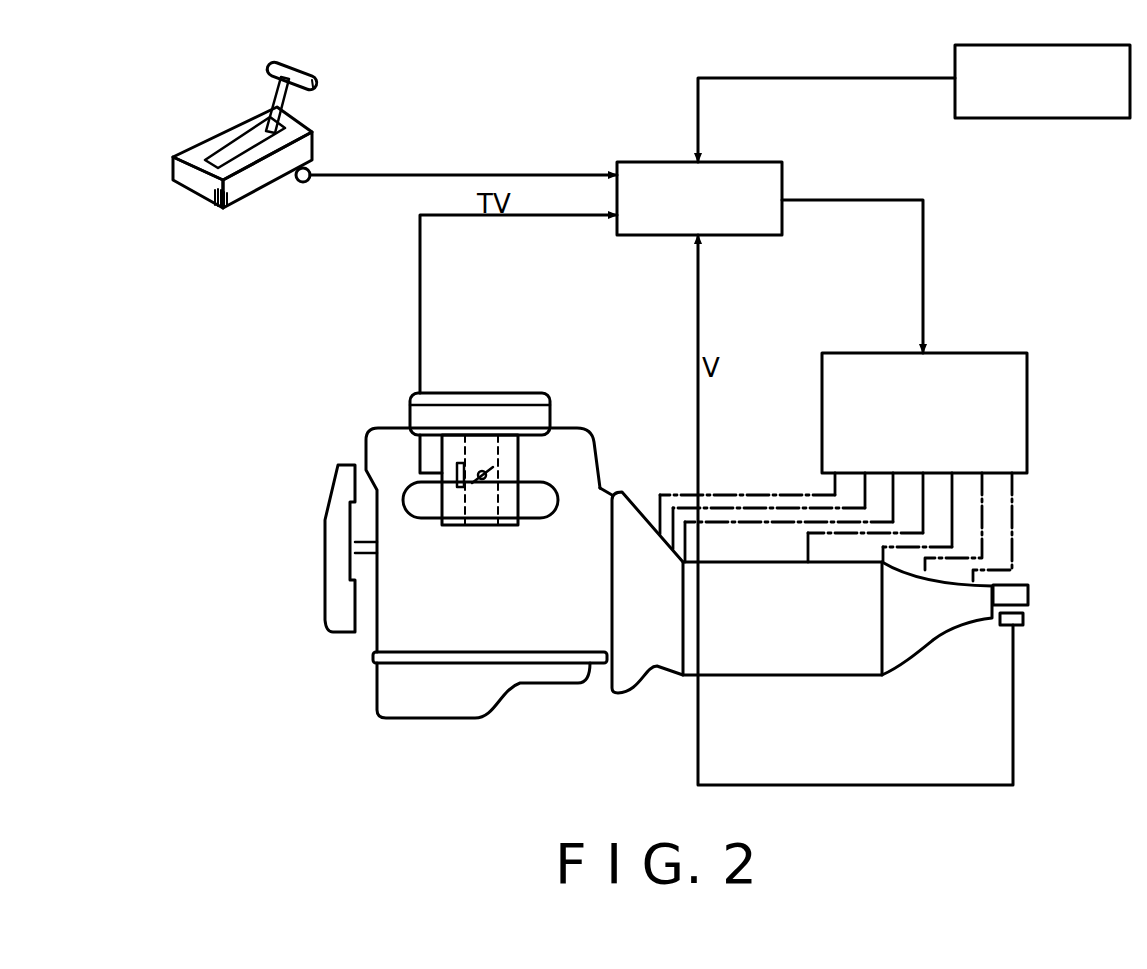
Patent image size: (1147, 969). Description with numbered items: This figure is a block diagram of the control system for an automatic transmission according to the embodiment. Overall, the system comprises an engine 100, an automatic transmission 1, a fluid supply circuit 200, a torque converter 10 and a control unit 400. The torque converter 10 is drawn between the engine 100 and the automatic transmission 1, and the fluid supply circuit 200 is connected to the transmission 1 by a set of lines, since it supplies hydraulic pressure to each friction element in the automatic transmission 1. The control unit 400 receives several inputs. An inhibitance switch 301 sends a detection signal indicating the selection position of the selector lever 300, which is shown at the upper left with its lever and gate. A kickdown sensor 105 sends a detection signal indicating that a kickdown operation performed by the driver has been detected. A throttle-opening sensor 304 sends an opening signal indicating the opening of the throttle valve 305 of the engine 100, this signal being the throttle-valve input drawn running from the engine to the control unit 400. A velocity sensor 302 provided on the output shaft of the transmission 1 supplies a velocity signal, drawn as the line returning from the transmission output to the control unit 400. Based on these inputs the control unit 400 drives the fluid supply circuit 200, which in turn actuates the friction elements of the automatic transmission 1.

The automatic transmission 1 is at (792, 677).
The torque converter 10 is at (657, 667).
The engine 100 is at (387, 636).
The sensor 105 is at (1055, 118).
The fluid supply circuit 200 is at (1027, 410).
The selector lever 300 is at (208, 143).
The inhibitance switch 301 is at (303, 182).
The velocity sensor 302 is at (1023, 619).
The throttle-opening sensor 304 is at (457, 490).
The throttle valve 305 is at (481, 480).
The control unit 400 is at (655, 235).